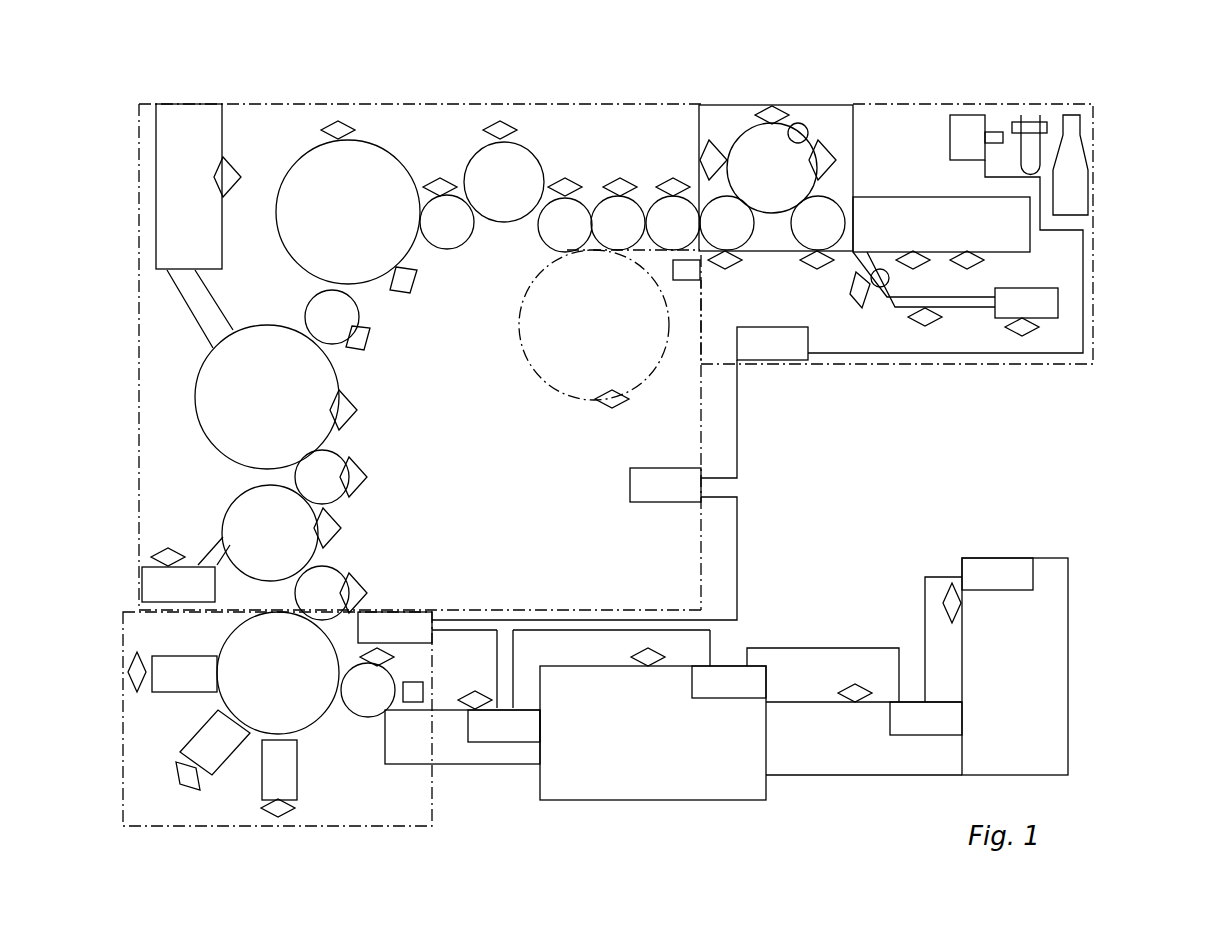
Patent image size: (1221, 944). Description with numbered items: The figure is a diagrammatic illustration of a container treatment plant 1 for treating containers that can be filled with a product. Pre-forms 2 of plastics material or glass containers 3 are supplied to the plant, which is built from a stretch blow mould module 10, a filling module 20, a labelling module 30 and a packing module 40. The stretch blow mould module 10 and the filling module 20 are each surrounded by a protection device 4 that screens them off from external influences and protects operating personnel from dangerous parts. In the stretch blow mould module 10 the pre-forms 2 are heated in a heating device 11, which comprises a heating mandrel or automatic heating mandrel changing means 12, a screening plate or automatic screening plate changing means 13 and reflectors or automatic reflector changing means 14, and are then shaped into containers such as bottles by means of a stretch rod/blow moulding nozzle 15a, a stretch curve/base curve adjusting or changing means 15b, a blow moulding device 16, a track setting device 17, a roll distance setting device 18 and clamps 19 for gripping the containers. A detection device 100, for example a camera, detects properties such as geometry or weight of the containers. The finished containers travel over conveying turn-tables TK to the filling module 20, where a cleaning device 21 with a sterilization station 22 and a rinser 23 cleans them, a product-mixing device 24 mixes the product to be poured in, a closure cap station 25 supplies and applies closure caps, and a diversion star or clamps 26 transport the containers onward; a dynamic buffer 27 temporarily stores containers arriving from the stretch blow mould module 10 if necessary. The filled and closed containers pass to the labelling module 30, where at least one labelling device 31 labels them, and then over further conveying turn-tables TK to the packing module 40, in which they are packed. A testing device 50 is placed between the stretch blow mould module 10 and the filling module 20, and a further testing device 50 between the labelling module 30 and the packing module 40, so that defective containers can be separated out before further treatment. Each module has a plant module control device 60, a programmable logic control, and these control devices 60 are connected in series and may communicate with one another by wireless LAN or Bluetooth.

The container treatment plant 1 is at (1140, 118).
The pre-forms 2 is at (1040, 115).
The glass containers 3 is at (1088, 195).
The protection device 4 is at (945, 364).
The stretch blow mould module 10 is at (1093, 330).
The heating device 11 is at (1030, 245).
The heating mandrel or automatic heating mandrel changing means 12 is at (1058, 268).
The screening plate or automatic screening plate changing means 13 is at (967, 260).
The reflectors or automatic reflector changing means 14 is at (1125, 272).
The stretch rod/blow moulding nozzle or automatic changing means 15a is at (785, 105).
The stretch curve/base curve automatic adjusting or changing means 15b is at (718, 140).
The blow moulding device or automatic blow moulding device changing means 16 is at (840, 137).
The track setting device 17 is at (925, 327).
The roll distance setting device 18 is at (1030, 336).
The clamps or automatic clamp changing means 19 is at (820, 268).
The filling module 20 is at (140, 387).
The cleaning device 21 is at (460, 92).
The sterilization station 22 is at (345, 120).
The rinser 23 is at (498, 120).
The product-mixing device 24 is at (156, 200).
The closure cap station 25 is at (140, 563).
The diversion star or clamps 26 is at (360, 572).
The dynamic buffer 27 is at (568, 395).
The labelling module 30 is at (415, 828).
The labelling device 31 is at (128, 680).
The packing module 40 is at (709, 842).
The testing device 50 is at (700, 280).
The plant module control device 60 is at (795, 360).
The detection device 100 is at (963, 115).
The conveying turn-tables TK is at (637, 193).